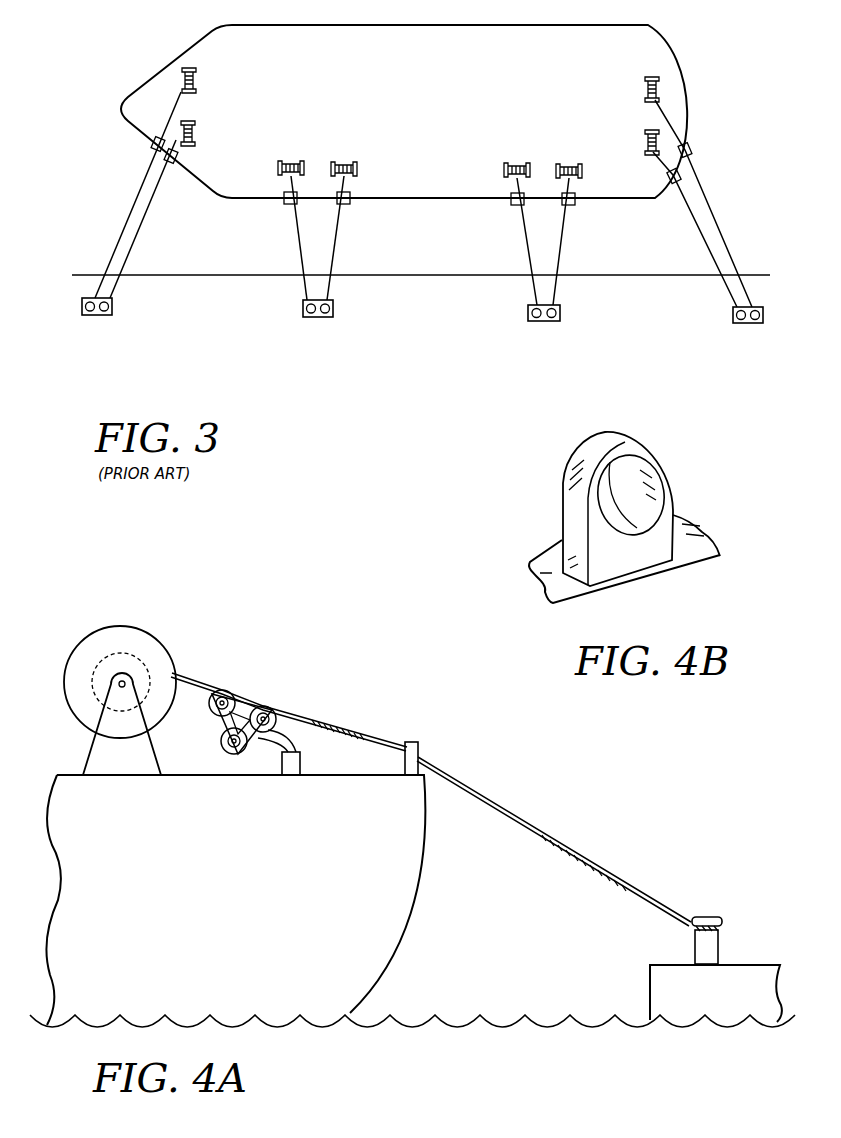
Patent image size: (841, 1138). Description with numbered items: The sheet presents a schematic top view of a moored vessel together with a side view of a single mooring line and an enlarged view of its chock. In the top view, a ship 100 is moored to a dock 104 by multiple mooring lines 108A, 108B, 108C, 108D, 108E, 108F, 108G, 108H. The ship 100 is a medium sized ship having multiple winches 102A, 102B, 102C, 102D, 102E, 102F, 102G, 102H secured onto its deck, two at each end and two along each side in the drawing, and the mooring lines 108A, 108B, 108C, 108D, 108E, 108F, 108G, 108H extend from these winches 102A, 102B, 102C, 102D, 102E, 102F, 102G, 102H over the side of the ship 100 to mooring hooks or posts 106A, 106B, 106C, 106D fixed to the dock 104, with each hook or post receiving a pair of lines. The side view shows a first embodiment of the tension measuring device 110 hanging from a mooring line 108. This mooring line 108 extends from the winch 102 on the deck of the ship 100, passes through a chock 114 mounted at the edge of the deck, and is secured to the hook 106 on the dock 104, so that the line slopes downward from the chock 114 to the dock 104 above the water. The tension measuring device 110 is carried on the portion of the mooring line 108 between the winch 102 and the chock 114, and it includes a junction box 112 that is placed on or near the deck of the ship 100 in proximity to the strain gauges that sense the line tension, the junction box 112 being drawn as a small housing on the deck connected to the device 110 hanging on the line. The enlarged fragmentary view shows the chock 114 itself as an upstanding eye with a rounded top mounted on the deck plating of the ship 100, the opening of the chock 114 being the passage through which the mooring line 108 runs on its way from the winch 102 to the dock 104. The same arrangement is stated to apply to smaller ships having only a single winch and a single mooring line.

In FIG. 3, the ship 100 is at (442, 86).
In FIG. 4B, the ship 100 is at (553, 560).
In FIG. 4A, the ship 100 is at (236, 896).
In FIG. 4A, the winch 102 is at (135, 640).
In FIG. 3, the winch 102A is at (187, 67).
In FIG. 3, the winch 102B is at (186, 120).
In FIG. 3, the winch 102C is at (297, 160).
In FIG. 3, the winch 102D is at (335, 161).
In FIG. 3, the winch 102E is at (521, 162).
In FIG. 3, the winch 102F is at (563, 163).
In FIG. 3, the winch 102G is at (653, 130).
In FIG. 3, the winch 102H is at (653, 77).
In FIG. 3, the dock 104 is at (442, 307).
In FIG. 4A, the dock 104 is at (749, 999).
In FIG. 4A, the hook 106 is at (702, 917).
In FIG. 3, the mooring hook or post 106A is at (100, 316).
In FIG. 3, the mooring hook or post 106B is at (318, 318).
In FIG. 3, the mooring hook or post 106C is at (543, 322).
In FIG. 3, the mooring hook or post 106D is at (748, 324).
In FIG. 4A, the mooring line 108 is at (360, 730).
In FIG. 3, the mooring line 108A is at (150, 166).
In FIG. 3, the mooring line 108B is at (150, 200).
In FIG. 3, the mooring line 108C is at (295, 224).
In FIG. 3, the mooring line 108D is at (334, 248).
In FIG. 3, the mooring line 108E is at (524, 226).
In FIG. 3, the mooring line 108F is at (561, 250).
In FIG. 3, the mooring line 108G is at (690, 190).
In FIG. 3, the mooring line 108H is at (712, 210).
In FIG. 4A, the tension measuring device 110 is at (251, 680).
In FIG. 4A, the junction box 112 is at (297, 758).
In FIG. 4B, the chock 114 is at (557, 446).
In FIG. 4A, the chock 114 is at (412, 747).